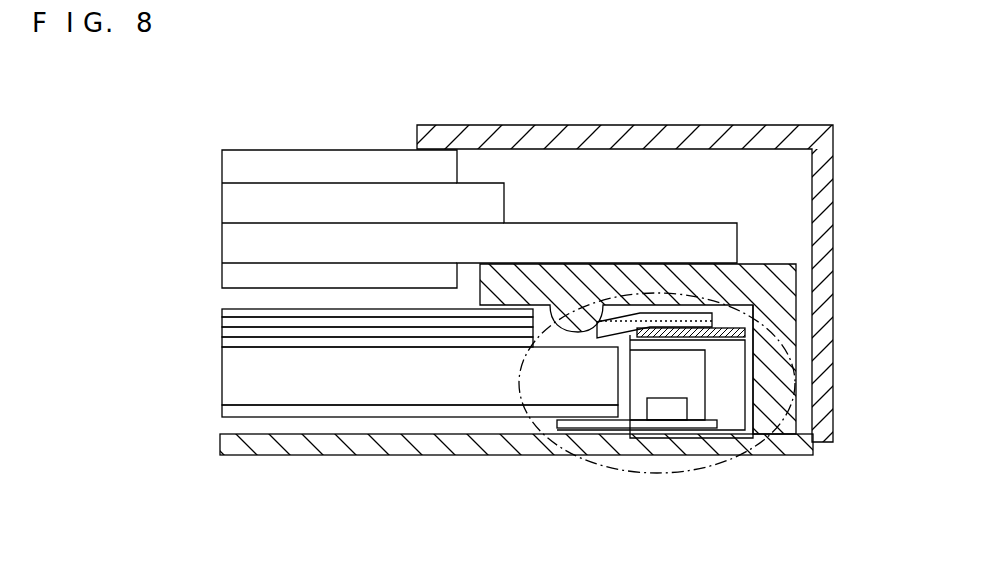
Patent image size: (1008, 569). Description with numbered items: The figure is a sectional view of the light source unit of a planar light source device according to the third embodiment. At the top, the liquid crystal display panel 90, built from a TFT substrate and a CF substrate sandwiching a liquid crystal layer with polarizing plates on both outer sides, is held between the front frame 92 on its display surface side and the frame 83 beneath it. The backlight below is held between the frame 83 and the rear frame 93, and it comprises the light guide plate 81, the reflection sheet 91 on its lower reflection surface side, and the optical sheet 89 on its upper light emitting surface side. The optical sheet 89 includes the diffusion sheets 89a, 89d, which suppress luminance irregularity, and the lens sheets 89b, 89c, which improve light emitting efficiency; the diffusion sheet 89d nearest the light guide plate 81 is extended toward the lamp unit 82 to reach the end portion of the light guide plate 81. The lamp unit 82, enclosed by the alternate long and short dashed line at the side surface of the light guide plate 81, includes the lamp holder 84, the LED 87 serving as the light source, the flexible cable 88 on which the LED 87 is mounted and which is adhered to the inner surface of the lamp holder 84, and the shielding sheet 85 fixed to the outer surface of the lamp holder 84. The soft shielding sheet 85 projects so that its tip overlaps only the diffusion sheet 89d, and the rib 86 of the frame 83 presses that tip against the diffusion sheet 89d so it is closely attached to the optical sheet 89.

The light guide plate 81 is at (222, 395).
The lamp unit 82 is at (668, 477).
The frame 83 is at (628, 283).
The lamp holder 84 is at (607, 440).
The shielding sheet 85 is at (688, 295).
The rib 86 is at (578, 283).
The LED 87 is at (690, 378).
The flexible cable 88 is at (733, 423).
The optical sheet 89 is at (296, 322).
The diffusion sheet 89a is at (222, 309).
The lens sheet 89b is at (222, 319).
The lens sheet 89c is at (222, 333).
The diffusion sheet 89d is at (328, 359).
The liquid crystal display panel 90 is at (220, 150).
The reflection sheet 91 is at (223, 414).
The front frame 92 is at (452, 125).
The rear frame 93 is at (373, 456).